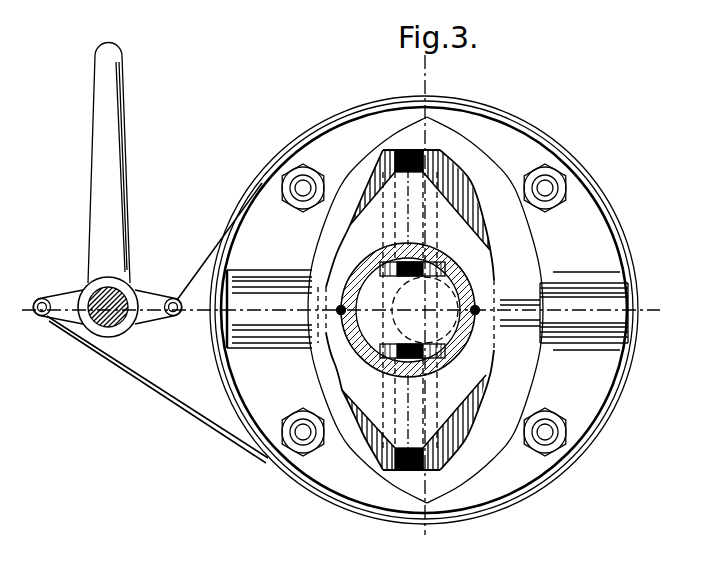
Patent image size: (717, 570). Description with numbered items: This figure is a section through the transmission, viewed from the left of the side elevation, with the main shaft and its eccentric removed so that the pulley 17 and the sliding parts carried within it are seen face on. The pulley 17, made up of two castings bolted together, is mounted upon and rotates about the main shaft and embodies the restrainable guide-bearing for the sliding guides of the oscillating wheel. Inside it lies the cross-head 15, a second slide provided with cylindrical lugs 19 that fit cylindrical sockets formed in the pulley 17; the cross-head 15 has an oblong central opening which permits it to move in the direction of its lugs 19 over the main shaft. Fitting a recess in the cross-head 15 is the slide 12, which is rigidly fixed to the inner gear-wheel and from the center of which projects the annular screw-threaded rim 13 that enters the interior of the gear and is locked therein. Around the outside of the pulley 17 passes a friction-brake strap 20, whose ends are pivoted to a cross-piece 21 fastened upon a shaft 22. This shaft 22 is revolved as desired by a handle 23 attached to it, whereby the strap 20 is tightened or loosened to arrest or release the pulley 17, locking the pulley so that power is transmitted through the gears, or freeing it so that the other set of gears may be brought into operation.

The slide 12 is at (410, 310).
The annular screw-threaded rim 13 is at (369, 320).
The cross-head 15 is at (460, 198).
The pulley 17 is at (598, 390).
The cylindrical lugs 19 is at (521, 330).
The strap 20 is at (172, 393).
The cross-piece 21 is at (63, 300).
The shaft 22 is at (127, 291).
The handle 23 is at (105, 190).